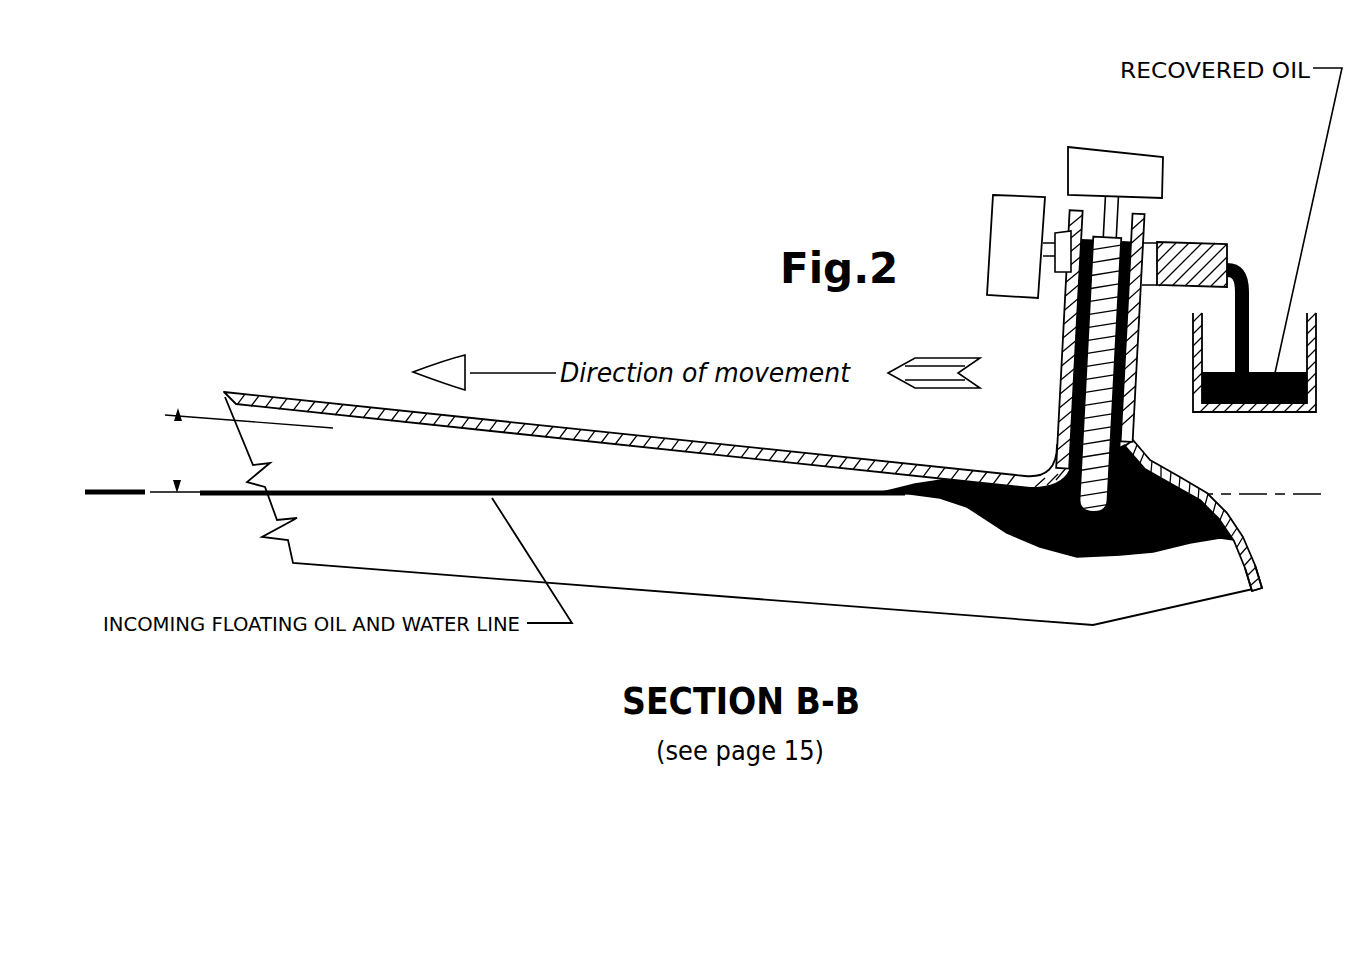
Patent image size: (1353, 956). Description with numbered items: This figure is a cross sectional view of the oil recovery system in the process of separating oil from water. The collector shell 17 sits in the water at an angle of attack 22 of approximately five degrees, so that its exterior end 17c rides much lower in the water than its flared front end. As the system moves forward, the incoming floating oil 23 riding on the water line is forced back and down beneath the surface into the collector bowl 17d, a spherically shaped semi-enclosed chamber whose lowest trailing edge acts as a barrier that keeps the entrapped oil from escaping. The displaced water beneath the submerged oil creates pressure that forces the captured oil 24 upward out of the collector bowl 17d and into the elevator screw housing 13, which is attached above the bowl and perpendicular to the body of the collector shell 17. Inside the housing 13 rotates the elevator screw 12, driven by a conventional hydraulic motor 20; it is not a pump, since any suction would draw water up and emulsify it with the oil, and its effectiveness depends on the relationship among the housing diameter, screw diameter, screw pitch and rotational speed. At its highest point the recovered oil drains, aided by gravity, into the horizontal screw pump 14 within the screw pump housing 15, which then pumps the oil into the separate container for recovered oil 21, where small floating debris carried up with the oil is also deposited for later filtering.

The elevator screw 12 is at (1148, 213).
The elevator screw housing 13 is at (1060, 370).
The horizontal screw pump 14 is at (1185, 285).
The screw pump housing 15 is at (1150, 240).
The collector shell 17 is at (803, 453).
The exterior end of collector shell 17c is at (1250, 548).
The collector bowl 17d is at (1253, 566).
The hydraulic motor 20 is at (1068, 148).
The container for recovered oil 21 is at (1225, 410).
The collector shell angle of attack 22 is at (177, 492).
The collector shell incoming floating oil 23 is at (782, 498).
The collector shell captured oil and displacement of water 24 is at (1082, 558).